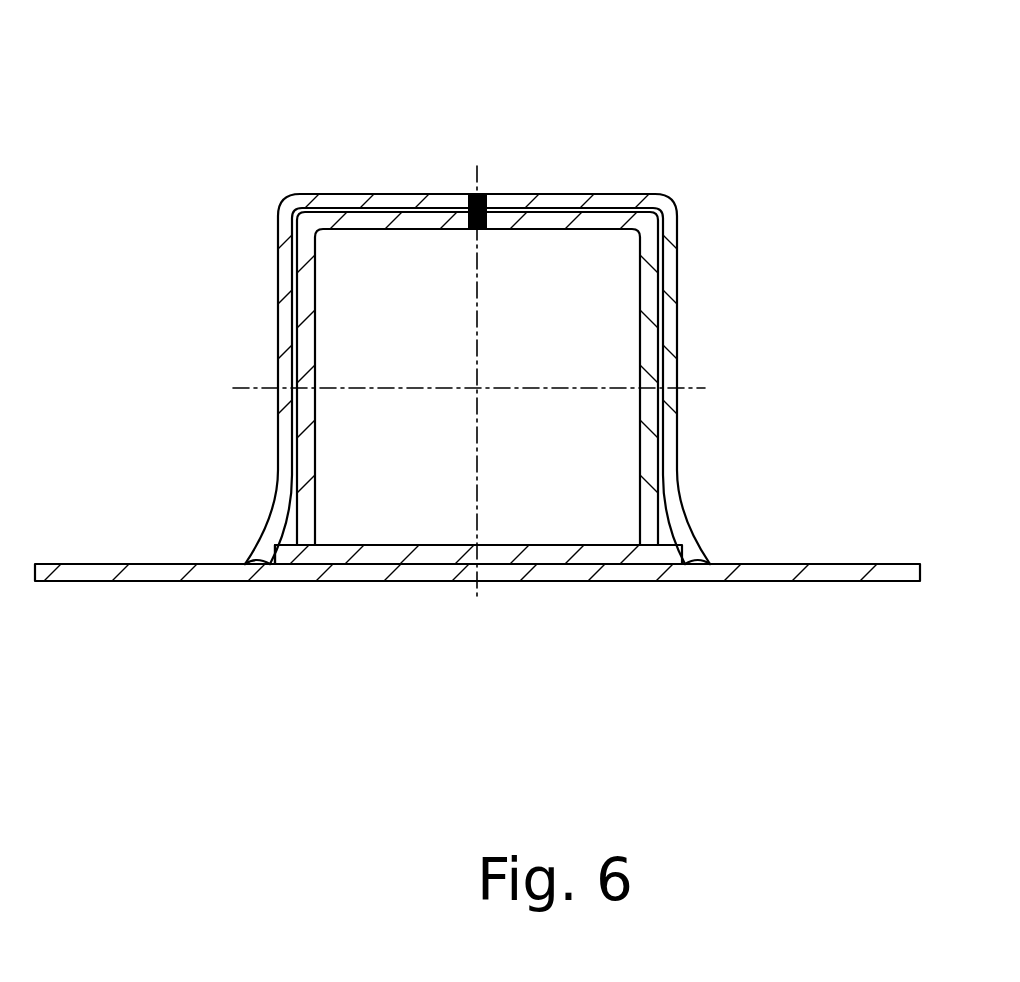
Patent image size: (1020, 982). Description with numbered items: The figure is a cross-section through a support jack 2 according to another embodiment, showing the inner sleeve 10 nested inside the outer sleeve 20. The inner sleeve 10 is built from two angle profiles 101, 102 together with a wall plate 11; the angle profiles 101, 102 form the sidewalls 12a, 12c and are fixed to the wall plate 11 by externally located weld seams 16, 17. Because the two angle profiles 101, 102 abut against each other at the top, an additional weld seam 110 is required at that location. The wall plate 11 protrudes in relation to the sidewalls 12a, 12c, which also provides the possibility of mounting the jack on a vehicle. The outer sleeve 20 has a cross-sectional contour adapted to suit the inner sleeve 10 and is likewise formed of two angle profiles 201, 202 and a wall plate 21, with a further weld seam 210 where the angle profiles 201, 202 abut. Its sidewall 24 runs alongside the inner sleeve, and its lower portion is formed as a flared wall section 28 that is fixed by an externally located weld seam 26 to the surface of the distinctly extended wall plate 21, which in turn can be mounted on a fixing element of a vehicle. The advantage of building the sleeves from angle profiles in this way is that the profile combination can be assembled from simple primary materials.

The support jack 2 is at (766, 143).
The inner sleeve 10 is at (642, 333).
The wall plate 11 is at (580, 549).
The sidewall 12a is at (315, 342).
The sidewall 12c is at (650, 447).
The weld seam 16 is at (276, 542).
The weld seam 17 is at (694, 505).
The outer sleeve 20 is at (686, 219).
The wall plate 21 is at (805, 567).
The sidewall 24 is at (676, 302).
The weld seam 26 is at (248, 563).
The flared wall section 28 is at (265, 546).
The angle profile 101 is at (362, 222).
The angle profile 102 is at (597, 221).
The weld seam 110 is at (476, 231).
The angle profile 201 is at (393, 206).
The angle profile 202 is at (550, 205).
The weld seam 210 is at (492, 197).